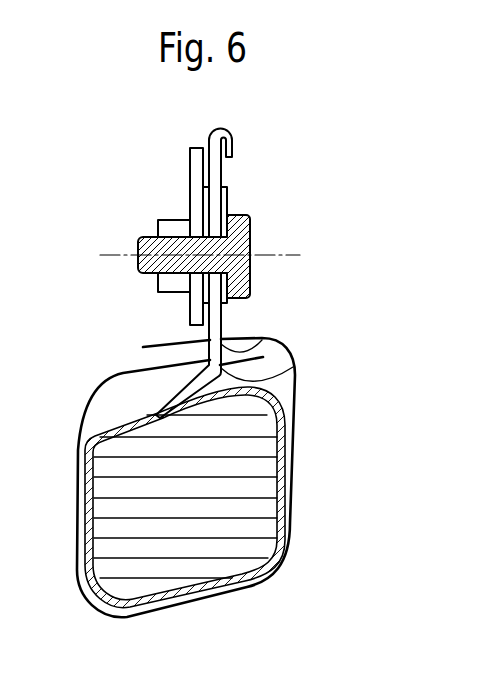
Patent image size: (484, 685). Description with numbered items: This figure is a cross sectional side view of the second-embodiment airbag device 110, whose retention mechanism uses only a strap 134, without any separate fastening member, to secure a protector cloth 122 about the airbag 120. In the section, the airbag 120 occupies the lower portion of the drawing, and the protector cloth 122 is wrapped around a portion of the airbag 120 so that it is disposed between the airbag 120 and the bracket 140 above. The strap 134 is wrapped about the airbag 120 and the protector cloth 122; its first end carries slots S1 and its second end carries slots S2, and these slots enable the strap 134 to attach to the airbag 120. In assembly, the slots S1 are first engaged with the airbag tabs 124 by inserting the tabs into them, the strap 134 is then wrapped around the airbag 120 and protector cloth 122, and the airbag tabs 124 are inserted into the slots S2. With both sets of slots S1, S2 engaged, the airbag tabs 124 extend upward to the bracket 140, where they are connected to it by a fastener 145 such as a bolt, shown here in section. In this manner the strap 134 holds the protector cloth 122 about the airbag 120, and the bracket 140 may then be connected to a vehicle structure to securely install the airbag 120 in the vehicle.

The airbag device 110 is at (293, 160).
The airbag 120 is at (263, 506).
The protector cloth 122 is at (288, 436).
The airbag tabs 124 is at (163, 400).
The strap 134 is at (292, 473).
The bracket 140 is at (190, 188).
The fastener 145 is at (250, 236).
The slots S1 is at (297, 366).
The slots S2 is at (267, 339).